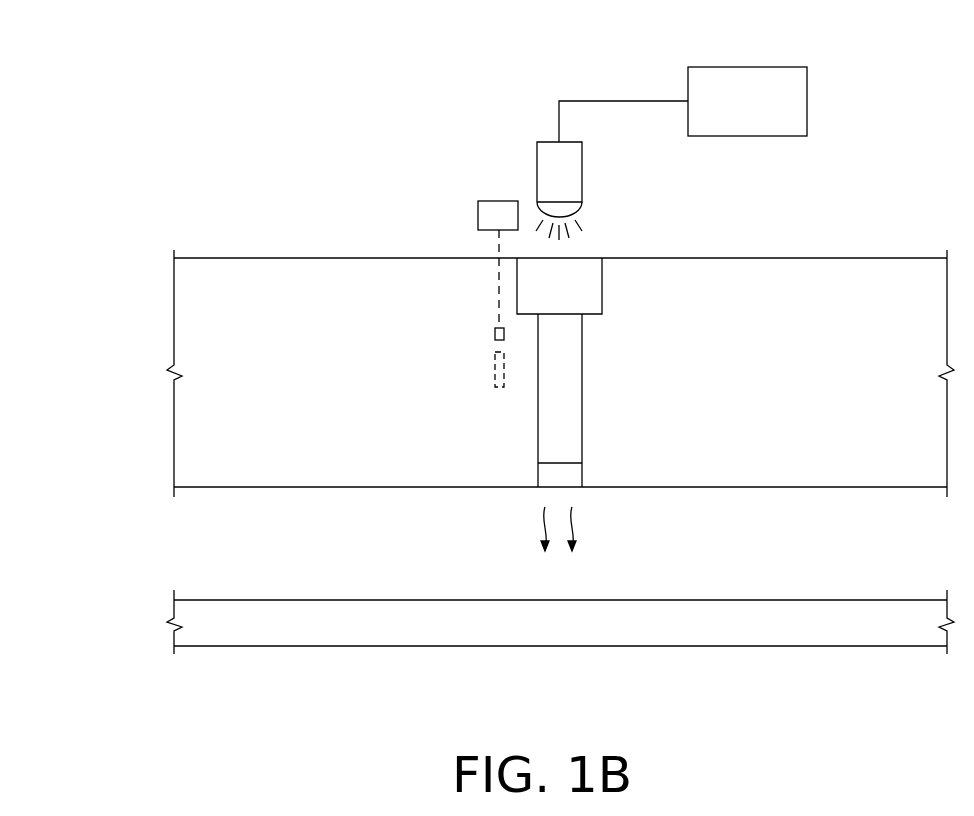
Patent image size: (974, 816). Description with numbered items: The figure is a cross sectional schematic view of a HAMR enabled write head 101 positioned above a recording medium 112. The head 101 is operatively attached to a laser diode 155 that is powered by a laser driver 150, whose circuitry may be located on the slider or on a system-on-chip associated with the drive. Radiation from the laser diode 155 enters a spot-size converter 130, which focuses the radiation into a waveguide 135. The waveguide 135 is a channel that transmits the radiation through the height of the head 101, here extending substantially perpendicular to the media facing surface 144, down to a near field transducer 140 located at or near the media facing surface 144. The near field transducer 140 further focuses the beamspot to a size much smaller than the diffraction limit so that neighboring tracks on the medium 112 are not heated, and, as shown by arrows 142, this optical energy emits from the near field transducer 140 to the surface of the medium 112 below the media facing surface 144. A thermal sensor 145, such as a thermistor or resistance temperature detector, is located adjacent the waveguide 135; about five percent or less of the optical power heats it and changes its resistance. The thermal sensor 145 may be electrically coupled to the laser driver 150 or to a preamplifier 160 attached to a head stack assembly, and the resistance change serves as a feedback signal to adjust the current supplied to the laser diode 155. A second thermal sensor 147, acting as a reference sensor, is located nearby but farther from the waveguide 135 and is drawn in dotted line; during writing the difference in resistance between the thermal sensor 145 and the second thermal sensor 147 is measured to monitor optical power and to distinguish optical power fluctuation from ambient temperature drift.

The HAMR enabled write head 101 is at (284, 230).
The medium 112 is at (824, 646).
The spot-size converter 130 is at (627, 258).
The waveguide 135 is at (538, 425).
The near field transducer 140 is at (538, 475).
The arrows 142 is at (534, 522).
The media facing surface 144 is at (323, 487).
The thermal sensor 145 is at (494, 333).
The second thermal sensor 147 is at (494, 368).
The laser driver 150 is at (783, 67).
The laser diode 155 is at (567, 167).
The preamplifier 160 is at (493, 200).